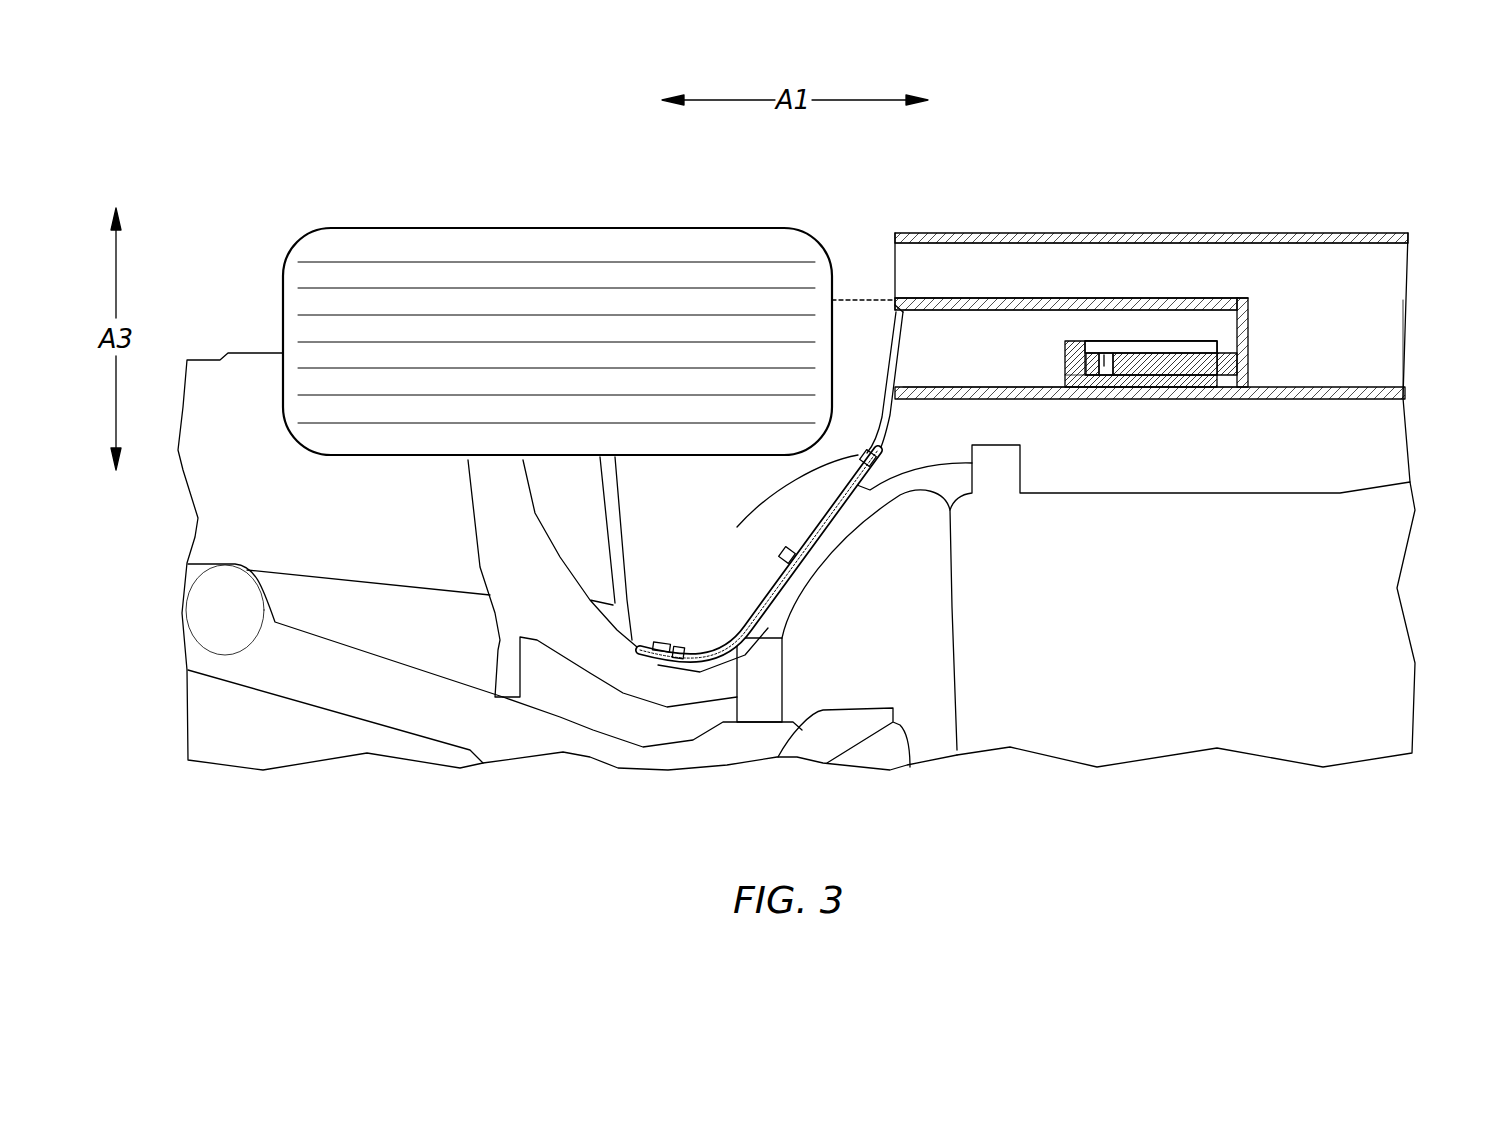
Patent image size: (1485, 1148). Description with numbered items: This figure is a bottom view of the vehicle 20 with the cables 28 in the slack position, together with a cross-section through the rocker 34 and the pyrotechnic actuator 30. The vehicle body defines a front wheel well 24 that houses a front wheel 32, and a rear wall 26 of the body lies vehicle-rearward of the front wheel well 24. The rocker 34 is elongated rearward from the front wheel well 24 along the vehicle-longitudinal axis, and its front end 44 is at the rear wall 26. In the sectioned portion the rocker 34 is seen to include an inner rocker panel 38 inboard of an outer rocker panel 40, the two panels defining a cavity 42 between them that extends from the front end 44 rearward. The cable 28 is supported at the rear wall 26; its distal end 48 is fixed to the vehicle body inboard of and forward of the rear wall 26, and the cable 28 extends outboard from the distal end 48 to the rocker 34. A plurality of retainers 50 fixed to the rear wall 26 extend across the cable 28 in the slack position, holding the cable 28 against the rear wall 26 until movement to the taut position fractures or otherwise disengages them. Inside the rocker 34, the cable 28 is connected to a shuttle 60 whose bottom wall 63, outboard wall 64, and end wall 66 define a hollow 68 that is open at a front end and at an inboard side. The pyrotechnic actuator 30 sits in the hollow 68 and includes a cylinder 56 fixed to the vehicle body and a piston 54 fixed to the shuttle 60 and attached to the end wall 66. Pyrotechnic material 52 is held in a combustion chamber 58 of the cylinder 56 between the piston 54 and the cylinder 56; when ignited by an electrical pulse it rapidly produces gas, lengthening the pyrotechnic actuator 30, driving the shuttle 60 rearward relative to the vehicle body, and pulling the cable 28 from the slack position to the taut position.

The vehicle 20 is at (1133, 786).
The front wheel well 24 is at (268, 424).
The rear wall 26 is at (897, 415).
The cable 28 is at (783, 585).
The pyrotechnic actuator 30 is at (1147, 377).
The front wheel 32 is at (435, 228).
The rocker 34 is at (1235, 258).
The inner rocker panel 38 is at (1313, 400).
The outer rocker panel 40 is at (1305, 233).
The cavity 42 is at (1380, 290).
The front end 44 is at (895, 302).
The distal end 48 is at (667, 655).
The retainer 50 is at (680, 647).
The pyrotechnic material 52 is at (1085, 375).
The piston 54 is at (1225, 368).
The cylinder 56 is at (1080, 378).
The combustion chamber 58 is at (1103, 357).
The shuttle 60 is at (1060, 297).
The bottom wall 63 is at (1148, 328).
The outboard wall 64 is at (996, 297).
The end wall 66 is at (1249, 348).
The hollow 68 is at (985, 337).